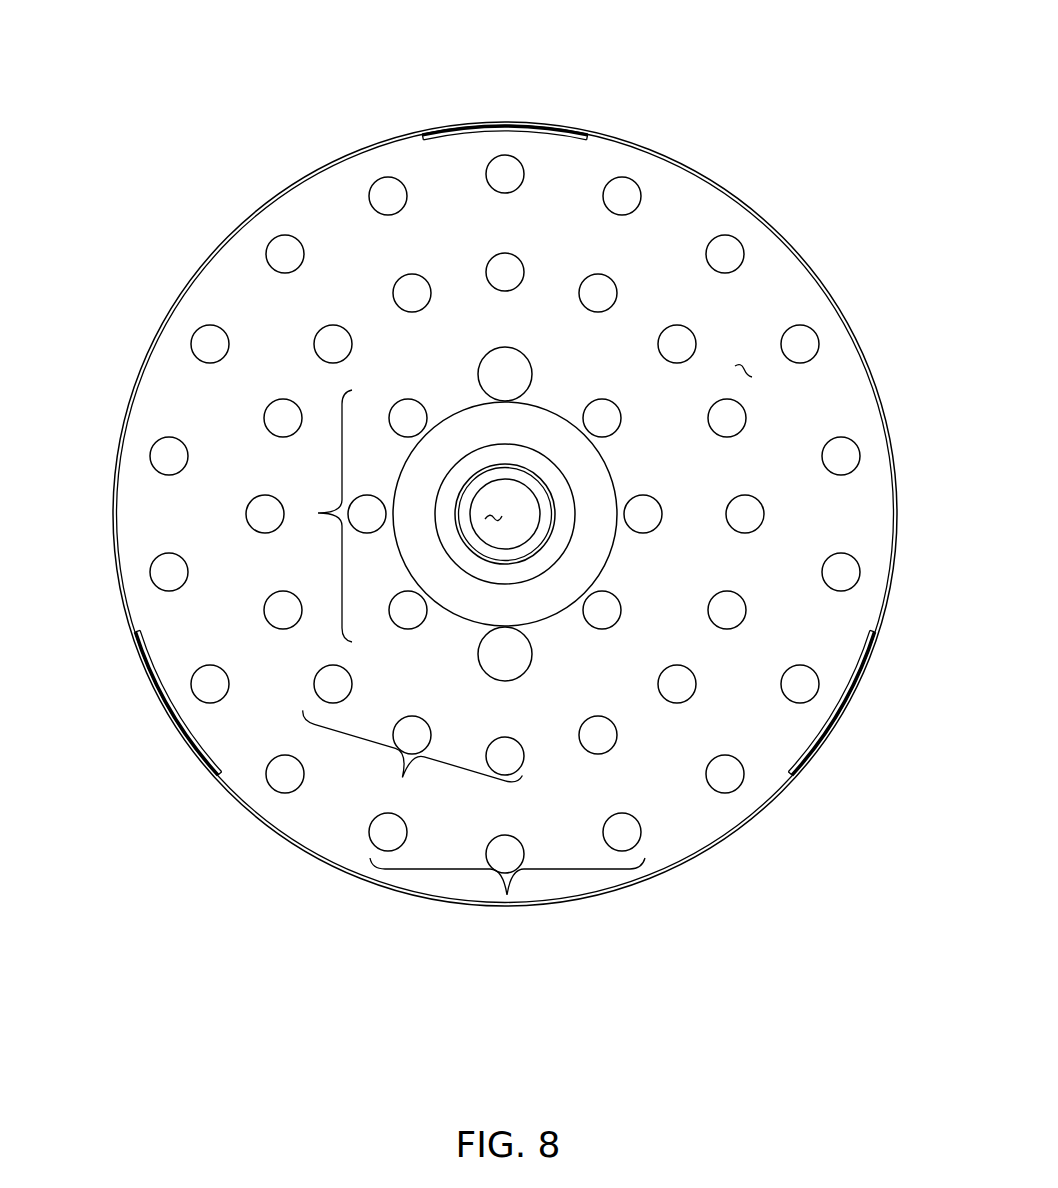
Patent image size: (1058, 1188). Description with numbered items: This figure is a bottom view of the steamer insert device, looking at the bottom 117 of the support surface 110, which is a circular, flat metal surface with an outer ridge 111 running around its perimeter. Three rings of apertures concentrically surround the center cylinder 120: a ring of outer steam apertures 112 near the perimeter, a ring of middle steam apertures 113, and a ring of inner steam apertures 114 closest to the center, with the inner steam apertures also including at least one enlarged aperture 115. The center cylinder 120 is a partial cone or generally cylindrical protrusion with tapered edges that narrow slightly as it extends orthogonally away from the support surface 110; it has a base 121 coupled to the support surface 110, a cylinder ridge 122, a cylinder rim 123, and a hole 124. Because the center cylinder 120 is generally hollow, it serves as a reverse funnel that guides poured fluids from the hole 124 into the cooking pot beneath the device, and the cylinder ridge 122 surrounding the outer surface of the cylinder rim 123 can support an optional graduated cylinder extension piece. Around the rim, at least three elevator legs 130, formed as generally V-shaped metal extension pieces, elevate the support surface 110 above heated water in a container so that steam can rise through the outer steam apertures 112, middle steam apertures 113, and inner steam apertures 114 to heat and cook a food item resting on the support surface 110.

The support surface 110 is at (283, 168).
The outer ridge 111 is at (688, 165).
The outer steam apertures 112 is at (508, 895).
The middle steam apertures 113 is at (398, 777).
The inner steam apertures 114 is at (318, 513).
The enlarged aperture 115 is at (523, 350).
The bottom 117 is at (745, 368).
The center cylinder 120 is at (565, 529).
The base 121 is at (528, 460).
The cylinder ridge 122 is at (557, 518).
The cylinder rim 123 is at (530, 550).
The hole 124 is at (485, 518).
The elevator legs 130 is at (508, 122).